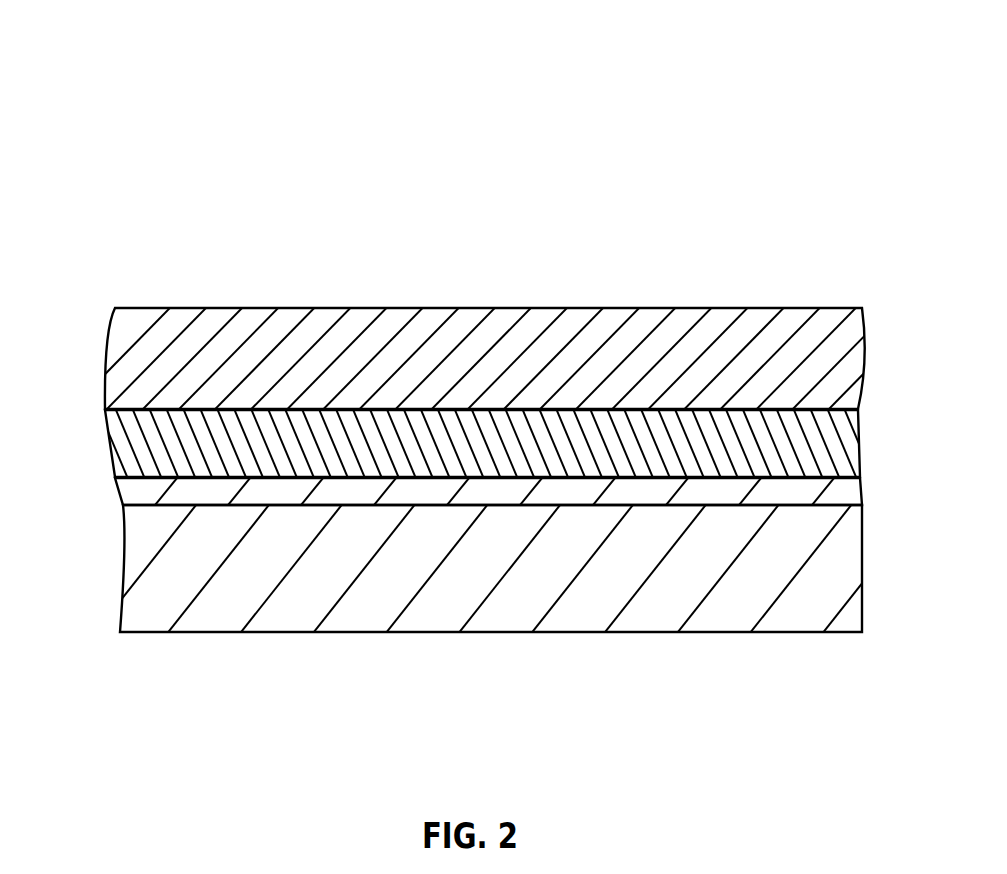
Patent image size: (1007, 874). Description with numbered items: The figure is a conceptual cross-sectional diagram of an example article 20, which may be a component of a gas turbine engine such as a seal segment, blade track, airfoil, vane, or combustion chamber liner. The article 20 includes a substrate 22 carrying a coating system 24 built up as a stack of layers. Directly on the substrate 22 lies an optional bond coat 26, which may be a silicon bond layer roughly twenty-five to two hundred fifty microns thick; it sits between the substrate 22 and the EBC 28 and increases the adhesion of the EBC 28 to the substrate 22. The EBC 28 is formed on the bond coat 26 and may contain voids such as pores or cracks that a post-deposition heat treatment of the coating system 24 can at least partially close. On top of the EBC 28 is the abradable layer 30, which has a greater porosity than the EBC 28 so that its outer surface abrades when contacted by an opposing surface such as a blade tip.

The article 20 is at (833, 72).
The substrate 22 is at (130, 573).
The coating system 24 is at (870, 307).
The bond coat 26 is at (133, 493).
The EBC 28 is at (117, 447).
The abradable layer 30 is at (104, 358).